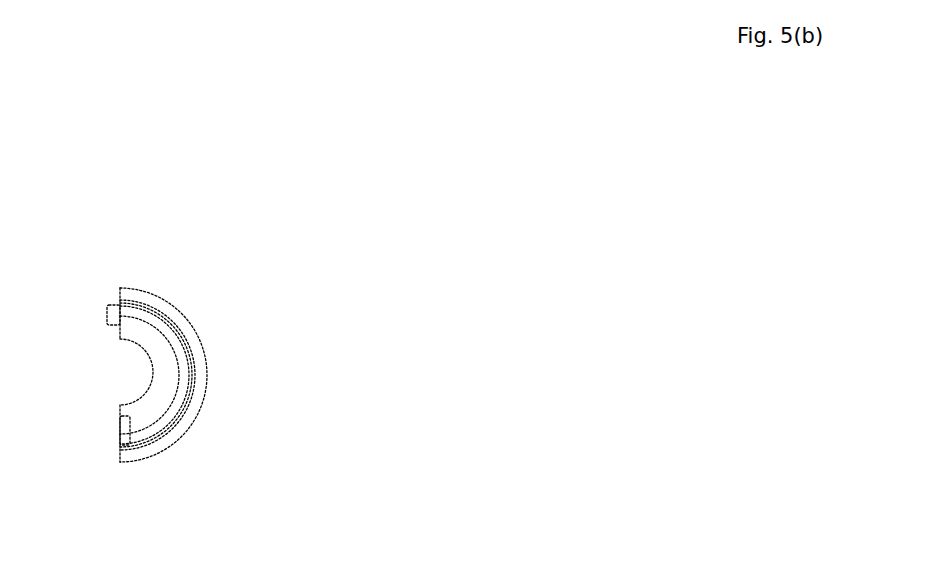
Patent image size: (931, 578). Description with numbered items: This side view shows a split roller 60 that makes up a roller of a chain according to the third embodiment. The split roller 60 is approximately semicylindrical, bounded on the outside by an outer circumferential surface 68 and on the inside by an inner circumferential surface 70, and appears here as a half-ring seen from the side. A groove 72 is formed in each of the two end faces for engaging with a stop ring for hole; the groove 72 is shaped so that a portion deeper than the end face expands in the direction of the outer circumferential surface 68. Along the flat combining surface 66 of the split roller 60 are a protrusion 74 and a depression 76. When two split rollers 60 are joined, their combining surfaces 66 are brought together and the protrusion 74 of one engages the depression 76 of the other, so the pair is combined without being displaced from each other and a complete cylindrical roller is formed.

The split roller 60 is at (132, 196).
The combining surface 66 is at (120, 451).
The outer circumferential surface 68 is at (193, 326).
The inner circumferential surface 70 is at (141, 394).
The groove 72 is at (160, 423).
The protrusion 74 is at (107, 312).
The depression 76 is at (121, 438).